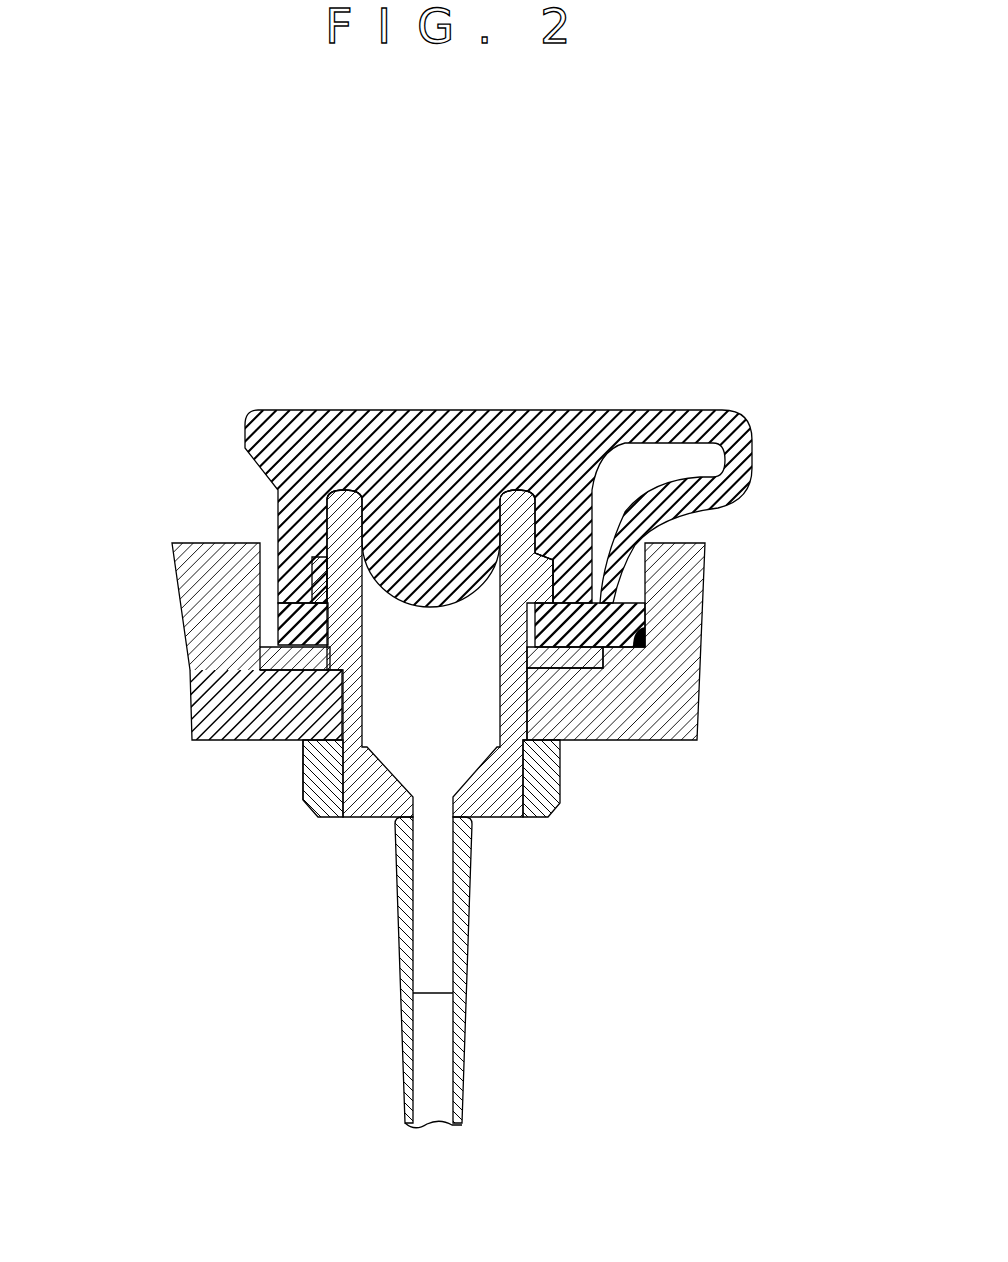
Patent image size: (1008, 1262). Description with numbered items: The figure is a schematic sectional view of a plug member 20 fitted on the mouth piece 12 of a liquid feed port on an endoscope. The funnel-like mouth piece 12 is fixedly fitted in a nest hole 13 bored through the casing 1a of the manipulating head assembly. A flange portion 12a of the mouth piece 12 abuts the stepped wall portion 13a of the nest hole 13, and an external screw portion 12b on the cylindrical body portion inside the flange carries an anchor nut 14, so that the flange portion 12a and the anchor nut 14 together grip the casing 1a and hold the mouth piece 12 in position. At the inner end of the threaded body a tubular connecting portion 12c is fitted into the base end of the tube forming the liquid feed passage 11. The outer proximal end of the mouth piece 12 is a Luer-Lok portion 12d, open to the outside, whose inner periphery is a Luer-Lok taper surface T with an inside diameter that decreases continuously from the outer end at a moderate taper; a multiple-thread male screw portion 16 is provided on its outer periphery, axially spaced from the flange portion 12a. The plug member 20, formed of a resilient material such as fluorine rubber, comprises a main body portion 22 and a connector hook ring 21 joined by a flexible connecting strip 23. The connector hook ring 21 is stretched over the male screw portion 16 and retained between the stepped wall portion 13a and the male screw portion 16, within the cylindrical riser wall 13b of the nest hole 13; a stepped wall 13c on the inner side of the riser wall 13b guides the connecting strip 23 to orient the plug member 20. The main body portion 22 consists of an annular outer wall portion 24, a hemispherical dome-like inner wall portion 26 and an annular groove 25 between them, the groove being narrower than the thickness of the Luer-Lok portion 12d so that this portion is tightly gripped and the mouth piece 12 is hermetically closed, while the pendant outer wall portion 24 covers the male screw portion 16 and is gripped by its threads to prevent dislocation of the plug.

The casing 1a is at (673, 703).
The liquid feed passage 11 is at (400, 1035).
The mouth piece 12 is at (502, 829).
The flange portion 12a is at (222, 732).
The external screw portion 12b is at (557, 790).
The tubular connecting portion 12c is at (400, 893).
The Luer-Lok portion 12d is at (593, 487).
The nest hole 13 is at (337, 790).
The stepped wall portion 13a is at (577, 652).
The cylindrical riser wall 13b is at (280, 620).
The stepped wall 13c is at (640, 630).
The anchor nut 14 is at (310, 778).
The male screw portion 16 is at (320, 587).
The plug member 20 is at (707, 407).
The connector hook ring 21 is at (216, 662).
The main body portion 22 is at (443, 408).
The flexible connecting strip 23 is at (760, 418).
The annular outer wall portion 24 is at (678, 602).
The annular groove 25 is at (520, 488).
The hemispherical dome-like inner wall portion 26 is at (405, 567).
The Luer-Lok taper surface T is at (378, 619).